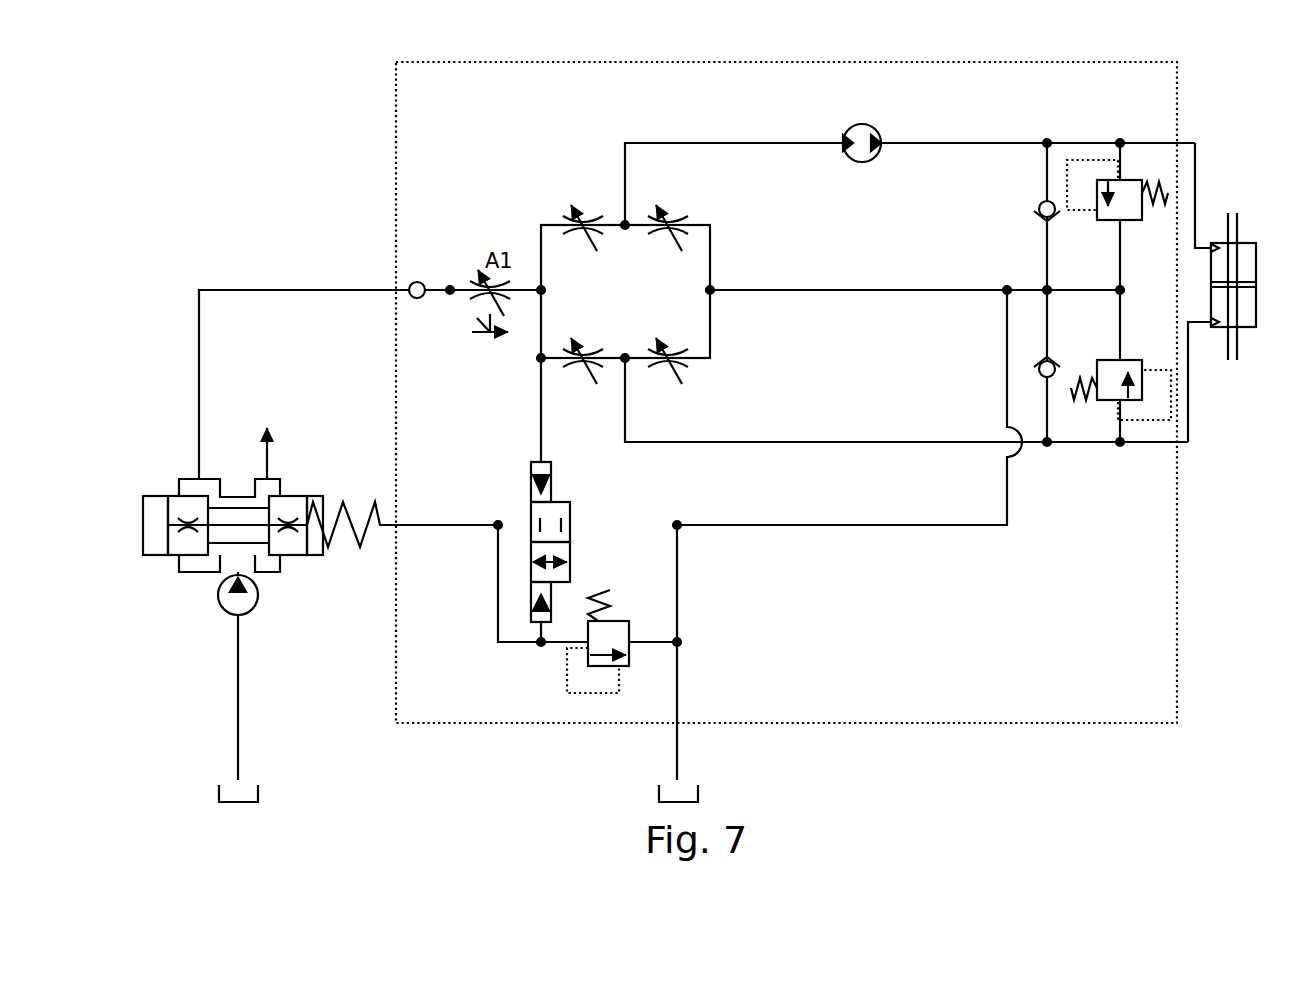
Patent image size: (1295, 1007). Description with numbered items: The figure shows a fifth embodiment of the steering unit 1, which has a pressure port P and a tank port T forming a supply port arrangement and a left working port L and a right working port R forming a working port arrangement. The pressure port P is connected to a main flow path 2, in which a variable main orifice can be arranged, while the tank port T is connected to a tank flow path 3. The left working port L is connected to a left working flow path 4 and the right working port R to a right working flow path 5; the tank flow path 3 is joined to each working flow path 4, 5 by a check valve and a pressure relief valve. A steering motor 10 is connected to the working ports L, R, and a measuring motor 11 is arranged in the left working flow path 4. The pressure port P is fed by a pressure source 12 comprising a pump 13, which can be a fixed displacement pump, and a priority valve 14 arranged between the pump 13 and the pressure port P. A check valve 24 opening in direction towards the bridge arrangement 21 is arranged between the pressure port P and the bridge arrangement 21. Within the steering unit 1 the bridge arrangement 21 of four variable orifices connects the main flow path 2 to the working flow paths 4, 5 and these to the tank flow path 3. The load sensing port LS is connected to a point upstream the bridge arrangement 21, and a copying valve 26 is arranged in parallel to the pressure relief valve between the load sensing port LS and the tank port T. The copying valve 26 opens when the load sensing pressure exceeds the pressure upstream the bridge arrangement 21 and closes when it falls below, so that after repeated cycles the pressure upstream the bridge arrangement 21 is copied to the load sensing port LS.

The steering unit 1 is at (1177, 75).
The main flow path 2 is at (440, 288).
The tank flow path 3 is at (800, 292).
The left working flow path 4 is at (940, 142).
The right working flow path 5 is at (940, 443).
The steering motor 10 is at (1243, 243).
The measuring motor 11 is at (866, 135).
The pressure source 12 is at (279, 483).
The pump 13 is at (232, 605).
The priority valve 14 is at (143, 525).
The bridge arrangement 21 is at (527, 212).
The pressure port 24 is at (418, 300).
The copying valve 26 is at (564, 548).